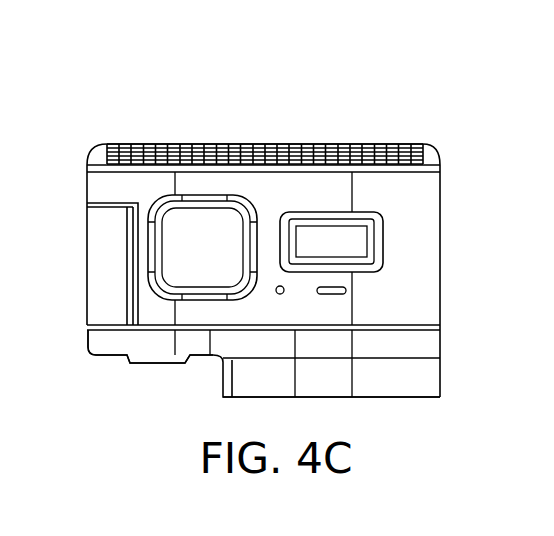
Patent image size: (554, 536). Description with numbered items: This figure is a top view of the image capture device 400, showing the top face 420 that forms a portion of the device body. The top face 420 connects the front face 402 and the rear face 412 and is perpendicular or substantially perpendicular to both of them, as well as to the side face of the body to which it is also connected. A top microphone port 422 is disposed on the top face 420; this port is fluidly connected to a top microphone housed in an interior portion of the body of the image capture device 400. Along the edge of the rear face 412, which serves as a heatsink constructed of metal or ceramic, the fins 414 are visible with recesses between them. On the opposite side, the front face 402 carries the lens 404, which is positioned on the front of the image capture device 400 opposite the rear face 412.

The image capture device 400 is at (258, 73).
The fins 414 is at (233, 150).
The rear face 412 is at (433, 151).
The top face 420 is at (423, 265).
The top microphone port 422 is at (278, 293).
The front face 402 is at (110, 342).
The lens 404 is at (423, 382).